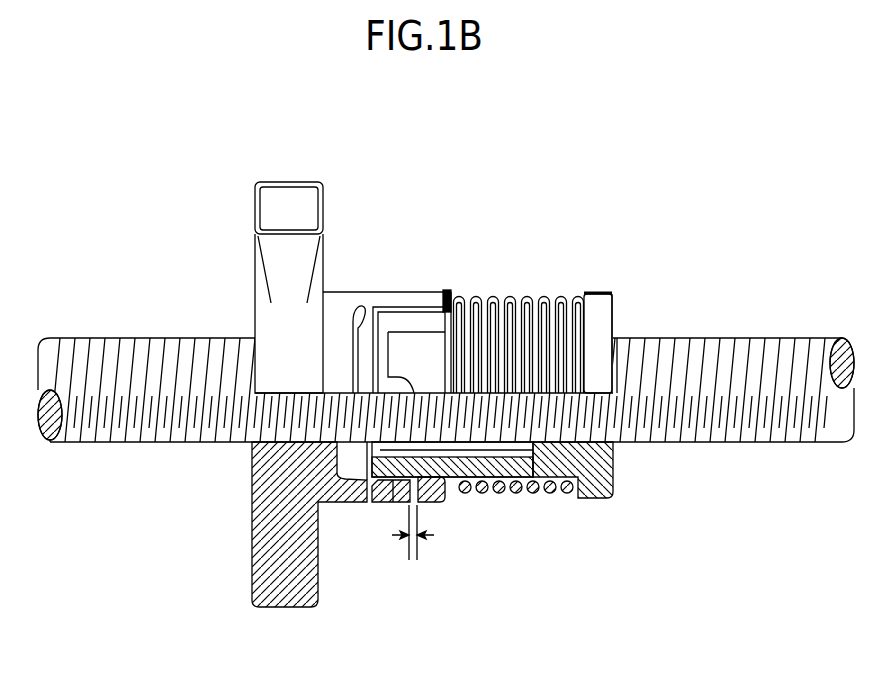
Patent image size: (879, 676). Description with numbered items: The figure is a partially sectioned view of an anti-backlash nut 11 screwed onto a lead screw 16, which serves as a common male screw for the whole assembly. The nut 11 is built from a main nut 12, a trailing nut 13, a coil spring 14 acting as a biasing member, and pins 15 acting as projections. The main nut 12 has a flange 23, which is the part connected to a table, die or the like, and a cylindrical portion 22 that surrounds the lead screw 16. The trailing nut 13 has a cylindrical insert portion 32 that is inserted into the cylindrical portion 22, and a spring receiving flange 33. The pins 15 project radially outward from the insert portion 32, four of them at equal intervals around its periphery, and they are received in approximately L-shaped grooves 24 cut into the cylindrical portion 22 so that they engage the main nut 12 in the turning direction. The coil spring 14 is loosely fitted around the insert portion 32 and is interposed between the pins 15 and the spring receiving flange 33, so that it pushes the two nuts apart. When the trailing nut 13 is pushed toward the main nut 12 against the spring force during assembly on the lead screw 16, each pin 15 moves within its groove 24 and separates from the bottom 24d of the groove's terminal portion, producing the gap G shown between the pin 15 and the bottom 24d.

The nut 11 is at (458, 232).
The main nut 12 is at (274, 372).
The trailing nut 13 is at (613, 333).
The coil spring 14 is at (538, 292).
The pin 15 is at (399, 481).
The lead screw 16 is at (189, 338).
The cylindrical portion 22 is at (420, 322).
The flange 23 is at (327, 189).
The groove 24 is at (366, 306).
The bottom of the terminal portion 24d is at (385, 482).
The cylindrical insert portion 32 is at (449, 291).
The spring receiving flange 33 is at (595, 292).
The gap G is at (413, 546).